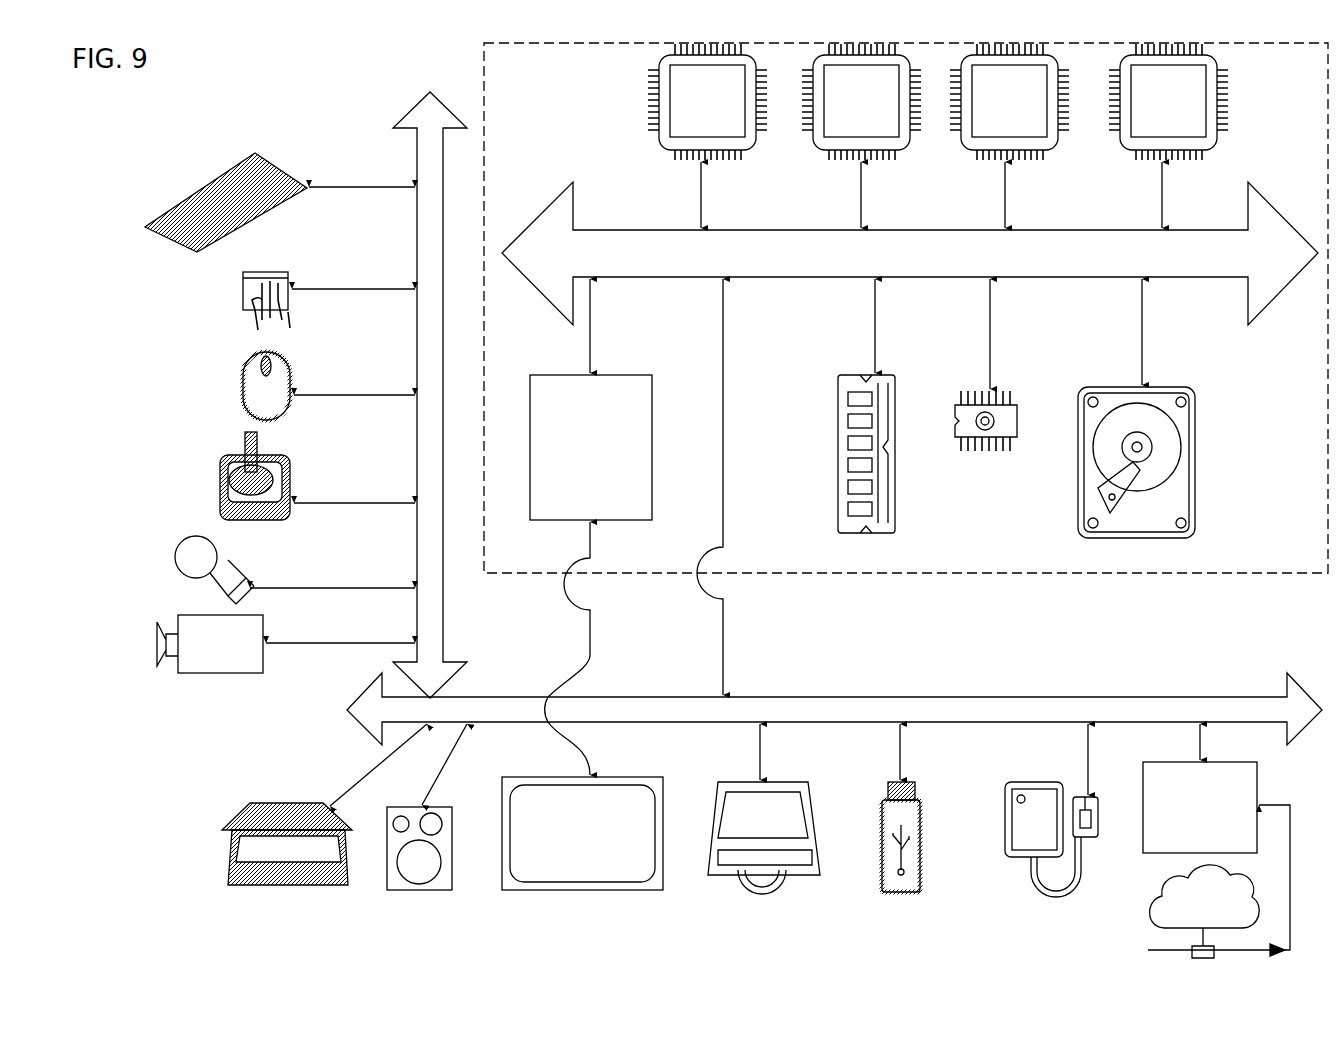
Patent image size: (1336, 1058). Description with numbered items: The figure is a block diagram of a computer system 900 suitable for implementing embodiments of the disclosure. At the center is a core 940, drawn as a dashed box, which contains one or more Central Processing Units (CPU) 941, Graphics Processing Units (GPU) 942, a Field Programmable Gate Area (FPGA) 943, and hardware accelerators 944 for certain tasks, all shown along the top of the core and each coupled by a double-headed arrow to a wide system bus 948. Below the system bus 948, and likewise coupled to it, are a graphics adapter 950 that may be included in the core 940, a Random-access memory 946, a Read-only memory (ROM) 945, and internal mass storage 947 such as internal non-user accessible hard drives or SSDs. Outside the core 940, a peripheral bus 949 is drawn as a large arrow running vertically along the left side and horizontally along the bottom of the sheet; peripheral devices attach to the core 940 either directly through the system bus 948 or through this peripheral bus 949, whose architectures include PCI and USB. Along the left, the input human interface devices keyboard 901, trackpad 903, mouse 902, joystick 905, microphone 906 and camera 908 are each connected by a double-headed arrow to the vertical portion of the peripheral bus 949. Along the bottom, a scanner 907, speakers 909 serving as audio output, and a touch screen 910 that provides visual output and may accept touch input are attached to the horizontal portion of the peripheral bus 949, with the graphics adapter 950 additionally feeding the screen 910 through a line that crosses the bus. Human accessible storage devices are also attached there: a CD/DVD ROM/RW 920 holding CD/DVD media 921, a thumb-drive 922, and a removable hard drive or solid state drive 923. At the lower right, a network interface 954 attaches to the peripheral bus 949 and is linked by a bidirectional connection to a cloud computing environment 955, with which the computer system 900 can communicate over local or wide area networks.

The computer system 900 is at (208, 91).
The keyboard 901 is at (145, 226).
The mouse 902 is at (243, 388).
The trackpad 903 is at (243, 298).
The joystick 905 is at (222, 498).
The microphone 906 is at (175, 562).
The scanner 907 is at (232, 860).
The camera 908 is at (158, 642).
The speakers 909 is at (425, 888).
The touch screen 910 is at (573, 890).
The CD/DVD ROM/RW 920 is at (806, 875).
The CD/DVD media 921 is at (742, 882).
The thumb-drive 922 is at (898, 892).
The removable hard drive or solid state drive 923 is at (1003, 862).
The core 940 is at (930, 573).
The Central Processing Unit (CPU) 941 is at (688, 129).
The Graphics Processing Unit (GPU) 942 is at (842, 129).
The Field Programmable Gate Area (FPGA) 943 is at (990, 129).
The hardware accelerator 944 is at (1149, 129).
The Read-only memory (ROM) 945 is at (980, 452).
The Random-access memory 946 is at (838, 450).
The internal mass storage 947 is at (1100, 387).
The system bus 948 is at (1047, 265).
The peripheral bus 949 is at (417, 134).
The graphics adapter 950 is at (572, 504).
The network interface 954 is at (1200, 788).
The cloud computing environment 955 is at (1150, 915).